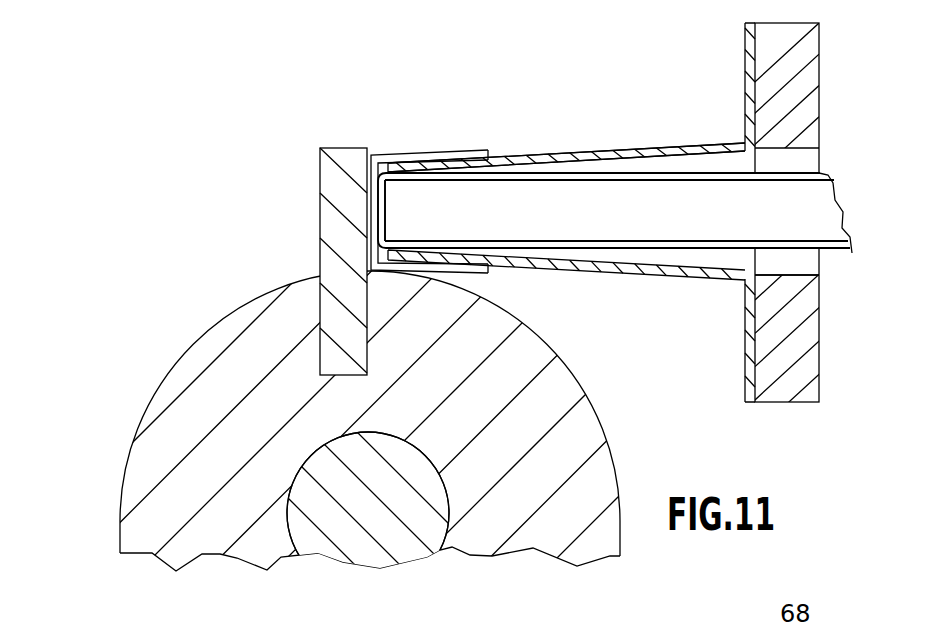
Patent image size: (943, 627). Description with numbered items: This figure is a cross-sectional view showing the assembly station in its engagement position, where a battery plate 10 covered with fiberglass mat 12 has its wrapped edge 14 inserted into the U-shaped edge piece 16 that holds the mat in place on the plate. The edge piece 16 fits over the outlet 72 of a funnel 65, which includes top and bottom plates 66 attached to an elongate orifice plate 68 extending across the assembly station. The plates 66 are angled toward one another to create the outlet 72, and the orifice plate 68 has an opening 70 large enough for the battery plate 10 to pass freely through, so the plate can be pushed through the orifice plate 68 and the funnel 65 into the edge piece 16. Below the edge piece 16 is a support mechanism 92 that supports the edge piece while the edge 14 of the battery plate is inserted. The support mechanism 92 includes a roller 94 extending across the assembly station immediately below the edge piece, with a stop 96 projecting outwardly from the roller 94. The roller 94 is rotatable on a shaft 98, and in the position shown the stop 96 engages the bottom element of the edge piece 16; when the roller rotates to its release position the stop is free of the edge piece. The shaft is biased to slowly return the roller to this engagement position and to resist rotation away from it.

The battery plate 10 is at (587, 223).
The fiberglass mat 12 is at (617, 250).
The edge 14 is at (424, 197).
The U-shaped edge piece 16 is at (415, 153).
The funnel 65 is at (611, 198).
The top and bottom plates 66 is at (678, 147).
The orifice plate 68 is at (780, 393).
The opening 70 is at (800, 267).
The outlet 72 is at (590, 167).
The support mechanism 92 is at (457, 358).
The roller 94 is at (135, 472).
The stop 96 is at (345, 156).
The shaft 98 is at (368, 552).